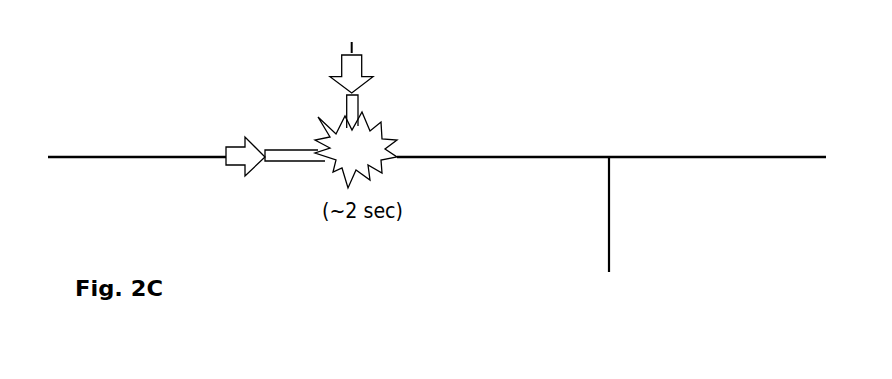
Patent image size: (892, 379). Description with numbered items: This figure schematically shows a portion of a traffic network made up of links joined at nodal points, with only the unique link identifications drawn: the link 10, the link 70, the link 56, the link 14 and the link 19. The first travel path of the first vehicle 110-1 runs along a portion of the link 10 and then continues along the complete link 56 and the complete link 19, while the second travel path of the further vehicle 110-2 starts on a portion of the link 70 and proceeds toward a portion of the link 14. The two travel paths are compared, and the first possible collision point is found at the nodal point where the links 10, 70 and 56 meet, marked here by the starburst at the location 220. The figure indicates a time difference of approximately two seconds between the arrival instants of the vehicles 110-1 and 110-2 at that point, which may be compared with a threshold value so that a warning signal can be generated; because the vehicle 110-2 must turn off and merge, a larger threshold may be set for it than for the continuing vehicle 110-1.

The link 10 is at (137, 143).
The link 14 is at (717, 140).
The link 19 is at (633, 214).
The link 56 is at (503, 140).
The link 70 is at (356, 139).
The first vehicle 110-1 is at (267, 172).
The further vehicle 110-2 is at (324, 85).
The heated region 220 is at (392, 124).